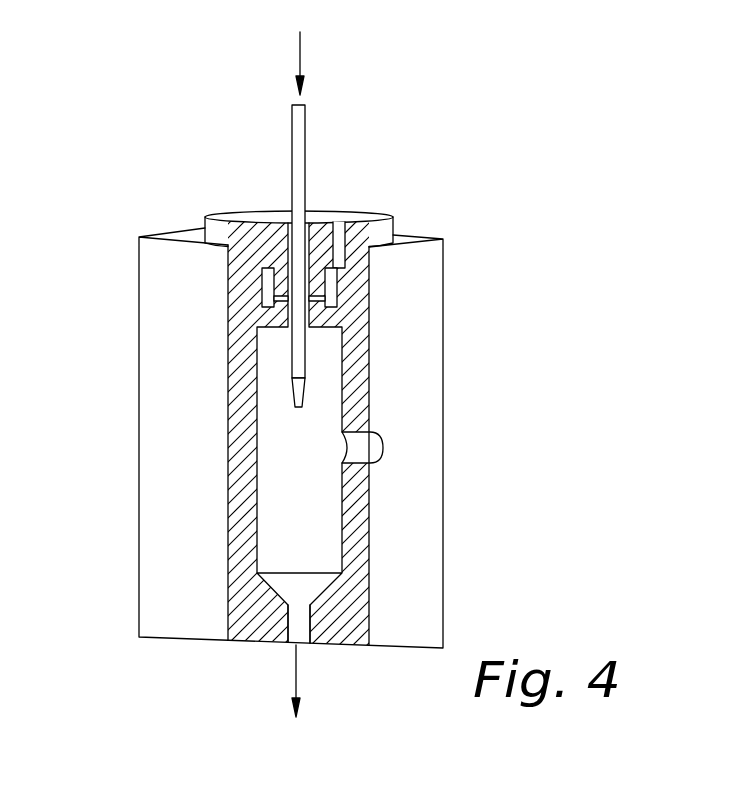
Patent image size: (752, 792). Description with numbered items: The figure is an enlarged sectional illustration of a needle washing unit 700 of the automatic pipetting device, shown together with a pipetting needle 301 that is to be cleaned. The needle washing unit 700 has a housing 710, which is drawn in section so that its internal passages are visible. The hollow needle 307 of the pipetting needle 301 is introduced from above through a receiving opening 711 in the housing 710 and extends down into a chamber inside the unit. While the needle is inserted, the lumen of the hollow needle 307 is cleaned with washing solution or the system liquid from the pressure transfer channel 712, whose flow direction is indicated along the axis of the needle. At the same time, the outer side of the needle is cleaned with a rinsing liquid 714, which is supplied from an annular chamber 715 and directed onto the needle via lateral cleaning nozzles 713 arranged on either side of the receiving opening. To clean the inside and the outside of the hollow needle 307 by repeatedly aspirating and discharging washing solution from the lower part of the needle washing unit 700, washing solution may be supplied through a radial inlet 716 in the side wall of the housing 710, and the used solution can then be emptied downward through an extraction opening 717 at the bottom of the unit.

The needle washing unit 700 is at (455, 258).
The housing 710 is at (432, 388).
The receiving opening 711 is at (288, 215).
The pressure transfer channel 712 is at (300, 42).
The lateral cleaning nozzles 713 is at (285, 298).
The rinsing liquid 714 is at (340, 190).
The annular chamber 715 is at (318, 297).
The radial inlet 716 is at (383, 442).
The extraction opening 717 is at (294, 630).
The pipetting needle 301 is at (318, 112).
The hollow needle 307 is at (295, 360).